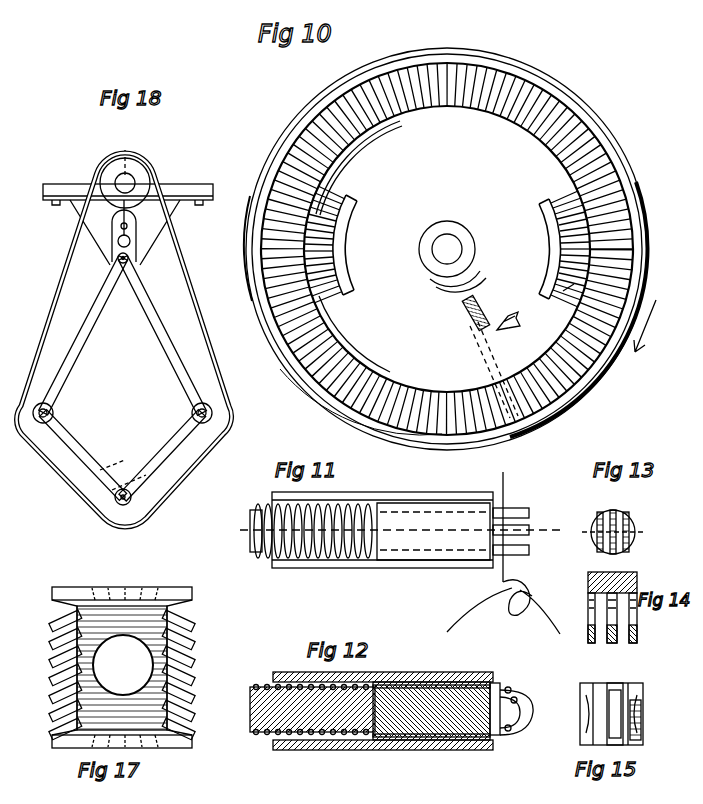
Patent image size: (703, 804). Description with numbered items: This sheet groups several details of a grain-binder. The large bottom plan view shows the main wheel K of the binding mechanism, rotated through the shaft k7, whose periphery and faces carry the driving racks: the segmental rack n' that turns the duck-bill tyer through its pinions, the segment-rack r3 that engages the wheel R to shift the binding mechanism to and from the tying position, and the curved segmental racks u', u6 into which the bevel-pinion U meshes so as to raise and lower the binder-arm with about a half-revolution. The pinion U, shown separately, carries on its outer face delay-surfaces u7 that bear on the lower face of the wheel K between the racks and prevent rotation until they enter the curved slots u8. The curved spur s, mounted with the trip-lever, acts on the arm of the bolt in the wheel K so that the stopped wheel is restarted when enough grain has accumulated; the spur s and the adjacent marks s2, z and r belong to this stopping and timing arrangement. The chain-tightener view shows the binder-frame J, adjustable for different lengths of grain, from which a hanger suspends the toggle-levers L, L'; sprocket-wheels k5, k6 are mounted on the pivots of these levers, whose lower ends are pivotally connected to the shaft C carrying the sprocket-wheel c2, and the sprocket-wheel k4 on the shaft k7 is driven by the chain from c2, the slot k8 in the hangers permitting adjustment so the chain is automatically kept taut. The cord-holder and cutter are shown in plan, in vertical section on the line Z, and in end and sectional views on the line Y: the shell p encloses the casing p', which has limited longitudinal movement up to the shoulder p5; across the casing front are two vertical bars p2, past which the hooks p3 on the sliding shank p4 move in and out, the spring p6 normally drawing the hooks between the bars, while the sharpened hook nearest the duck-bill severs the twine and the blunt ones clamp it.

In FIG. 10, the main wheel K is at (388, 388).
In FIG. 10, the segment-rack r3 is at (258, 196).
In FIG. 17, the segment-rack r3 is at (8, 573).
In FIG. 10, the curved segmental rack u' is at (340, 244).
In FIG. 10, the curved slot u8 is at (343, 232).
In FIG. 10, the curved segmental rack u6 is at (574, 284).
In FIG. 10, the curved spur s is at (466, 330).
In FIG. 10, the stop block face s2 is at (472, 332).
In FIG. 10, the section line z z is at (518, 314).
In FIG. 10, the belt band r is at (560, 408).
In FIG. 10, the segmental rack n' is at (380, 417).
In FIG. 18, the binder-frame J is at (128, 215).
In FIG. 18, the sprocket-wheel k4 is at (140, 170).
In FIG. 18, the shaft k7 is at (121, 151).
In FIG. 18, the slot k8 is at (130, 224).
In FIG. 18, the sprocket-wheel c2 is at (124, 343).
In FIG. 18, the toggle-lever L is at (123, 334).
In FIG. 18, the toggle-lever L' is at (122, 455).
In FIG. 18, the sprocket-wheel k5 is at (30, 413).
In FIG. 18, the sprocket-wheel k6 is at (217, 413).
In FIG. 18, the shaft C is at (121, 500).
In FIG. 17, the bevel-pinion U is at (185, 640).
In FIG. 17, the delay-surfaces u7 is at (163, 590).
In FIG. 11, the shell p is at (382, 520).
In FIG. 12, the shell p is at (383, 725).
In FIG. 11, the casing p' is at (433, 531).
In FIG. 12, the casing p' is at (431, 730).
In FIG. 15, the casing p' is at (623, 714).
In FIG. 11, the vertical bars p2 is at (505, 522).
In FIG. 12, the vertical bars p2 is at (503, 684).
In FIG. 15, the vertical bars p2 is at (598, 690).
In FIG. 11, the hooks p3 is at (528, 510).
In FIG. 12, the hooks p3 is at (528, 712).
In FIG. 13, the hooks p3 is at (598, 524).
In FIG. 14, the hooks p3 is at (612, 607).
In FIG. 15, the hooks p3 is at (607, 696).
In FIG. 11, the sliding shank p4 is at (252, 514).
In FIG. 12, the sliding shank p4 is at (252, 732).
In FIG. 11, the shoulder p5 is at (497, 498).
In FIG. 11, the spring p6 is at (262, 556).
In FIG. 12, the spring p6 is at (256, 685).
In FIG. 11, the section line z z Z is at (396, 530).
In FIG. 13, the section line Y is at (612, 533).